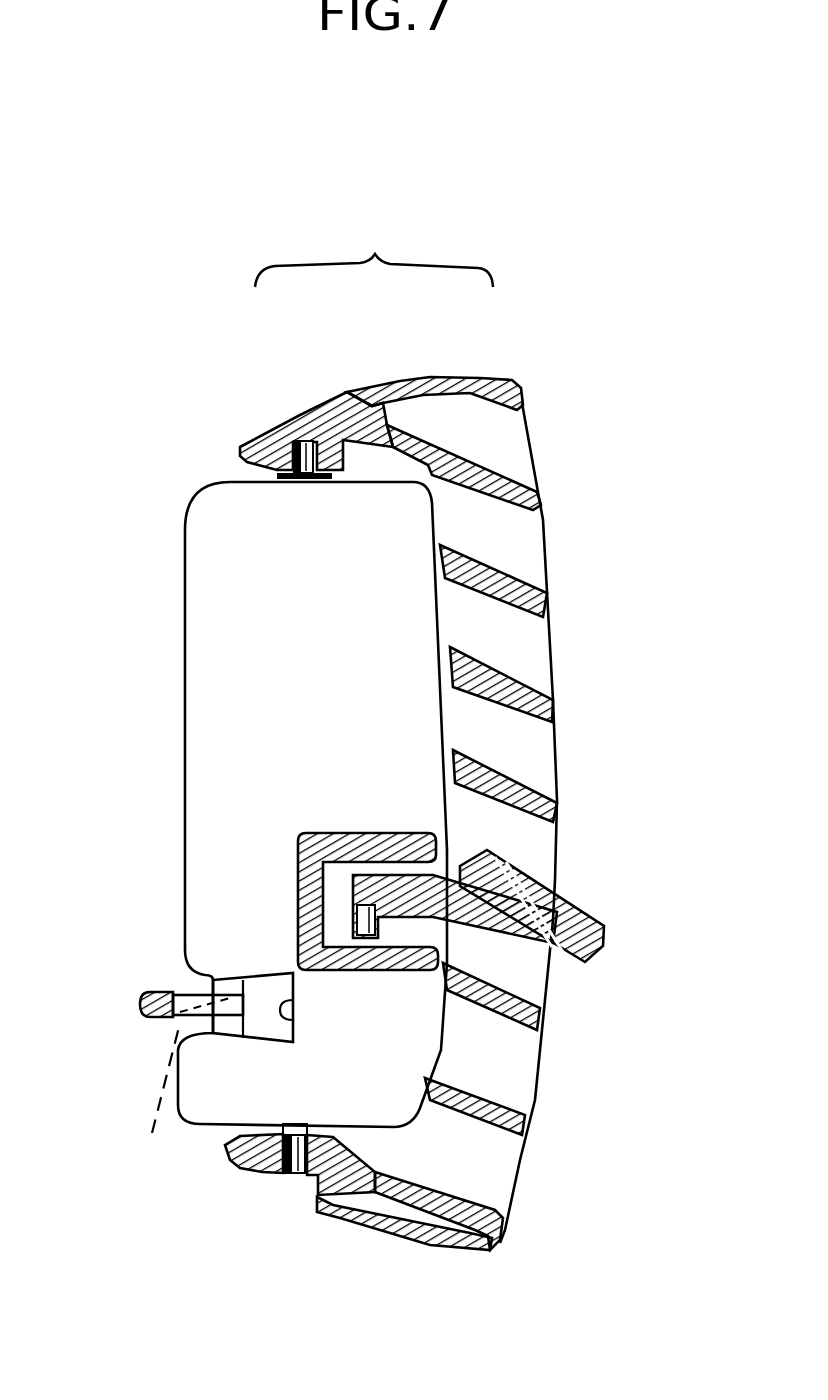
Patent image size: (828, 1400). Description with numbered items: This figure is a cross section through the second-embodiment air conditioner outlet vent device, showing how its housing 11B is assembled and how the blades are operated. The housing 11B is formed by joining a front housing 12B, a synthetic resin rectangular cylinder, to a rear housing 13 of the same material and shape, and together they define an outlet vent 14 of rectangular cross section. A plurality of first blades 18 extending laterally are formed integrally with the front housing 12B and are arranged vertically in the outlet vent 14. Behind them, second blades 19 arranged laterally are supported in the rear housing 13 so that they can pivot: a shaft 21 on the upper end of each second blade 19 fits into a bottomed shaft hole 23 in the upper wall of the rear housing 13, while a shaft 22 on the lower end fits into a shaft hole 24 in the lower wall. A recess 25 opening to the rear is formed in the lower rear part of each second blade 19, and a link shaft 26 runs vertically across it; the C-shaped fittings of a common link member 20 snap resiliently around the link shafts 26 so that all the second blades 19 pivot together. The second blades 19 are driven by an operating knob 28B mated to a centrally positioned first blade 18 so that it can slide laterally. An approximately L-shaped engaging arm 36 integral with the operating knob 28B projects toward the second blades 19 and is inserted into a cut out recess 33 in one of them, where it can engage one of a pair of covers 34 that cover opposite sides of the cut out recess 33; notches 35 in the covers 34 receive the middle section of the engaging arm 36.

The housing 11B is at (374, 254).
The front housing 12B is at (448, 378).
The rear housing 13 is at (303, 415).
The outlet vent 14 is at (522, 555).
The first blades 18 is at (537, 1022).
The second blades 19 is at (217, 600).
The link member 20 is at (147, 998).
The shaft 21 is at (258, 433).
The shaft 22 is at (293, 1175).
The bottomed shaft hole 23 is at (300, 480).
The shaft hole 24 is at (293, 1133).
The recess 25 is at (293, 1025).
The link shaft 26 is at (159, 1100).
The operating knob 28B is at (588, 885).
The cut out recess 33 is at (298, 882).
The covers 34 is at (333, 880).
The notches 35 is at (417, 837).
The engaging arm 36 is at (390, 872).